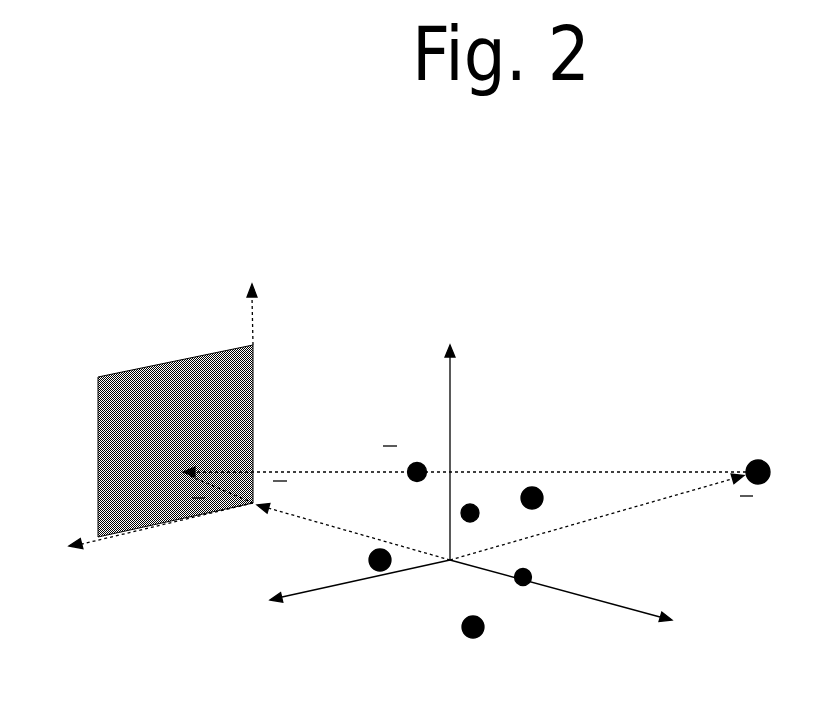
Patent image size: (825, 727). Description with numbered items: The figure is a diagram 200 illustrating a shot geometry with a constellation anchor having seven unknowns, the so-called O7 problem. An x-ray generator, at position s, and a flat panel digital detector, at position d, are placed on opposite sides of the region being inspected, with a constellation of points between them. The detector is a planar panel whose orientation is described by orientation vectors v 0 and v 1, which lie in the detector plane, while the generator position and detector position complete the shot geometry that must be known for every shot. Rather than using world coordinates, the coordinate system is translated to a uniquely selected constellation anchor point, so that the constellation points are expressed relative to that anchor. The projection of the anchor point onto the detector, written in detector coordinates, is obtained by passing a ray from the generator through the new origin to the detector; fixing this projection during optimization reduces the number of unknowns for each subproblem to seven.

The diagram 200 is at (490, 178).
The detector orientation vector v0 0 is at (290, 312).
The detector orientation vector v1 1 is at (79, 502).